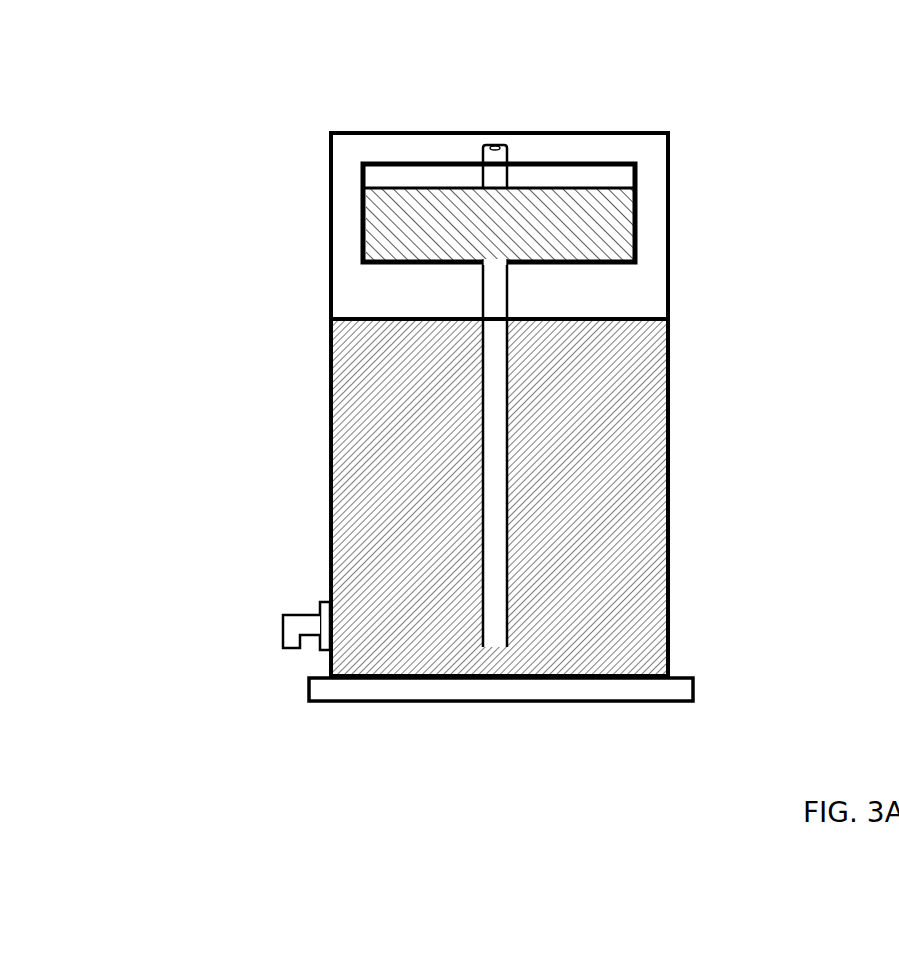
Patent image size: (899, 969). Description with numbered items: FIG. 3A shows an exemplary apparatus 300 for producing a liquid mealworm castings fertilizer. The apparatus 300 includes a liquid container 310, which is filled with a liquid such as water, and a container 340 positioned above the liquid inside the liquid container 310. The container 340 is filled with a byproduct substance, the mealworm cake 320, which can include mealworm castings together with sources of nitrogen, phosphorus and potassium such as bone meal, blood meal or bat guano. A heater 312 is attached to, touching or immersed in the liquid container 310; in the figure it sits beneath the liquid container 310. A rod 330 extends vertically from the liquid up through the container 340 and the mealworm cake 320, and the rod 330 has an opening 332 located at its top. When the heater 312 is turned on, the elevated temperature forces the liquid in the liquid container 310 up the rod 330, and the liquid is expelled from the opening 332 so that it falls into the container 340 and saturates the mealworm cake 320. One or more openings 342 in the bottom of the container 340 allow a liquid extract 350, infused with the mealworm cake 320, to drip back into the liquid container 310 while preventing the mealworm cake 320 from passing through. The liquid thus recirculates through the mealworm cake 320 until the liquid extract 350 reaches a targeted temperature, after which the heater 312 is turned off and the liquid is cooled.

The apparatus 300 is at (312, 84).
The liquid container 310 is at (672, 452).
The heater 312 is at (555, 689).
The mealworm cake 320 is at (386, 214).
The rod 330 is at (509, 307).
The opening 332 is at (499, 141).
The container 340 is at (637, 168).
The opening 342 is at (610, 264).
The liquid extract 350 is at (358, 440).